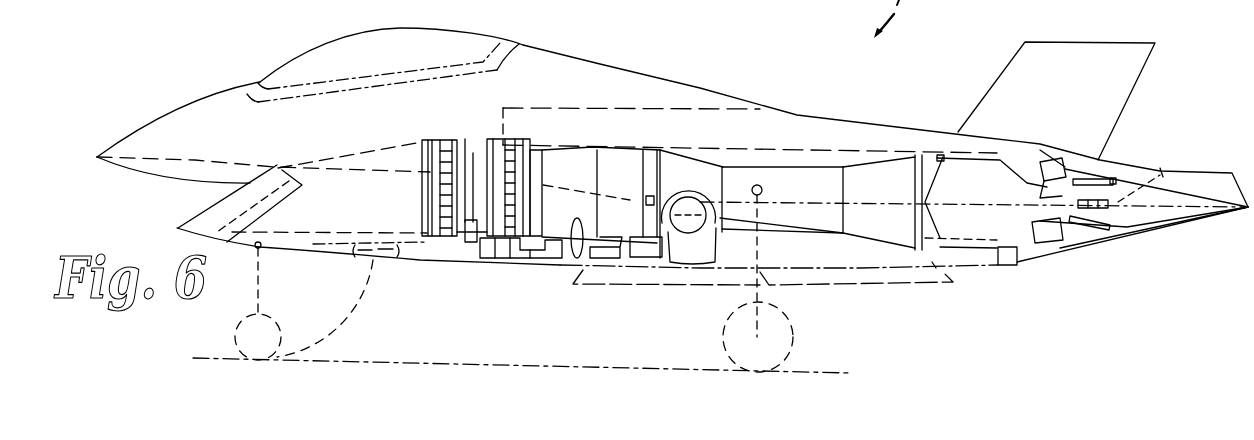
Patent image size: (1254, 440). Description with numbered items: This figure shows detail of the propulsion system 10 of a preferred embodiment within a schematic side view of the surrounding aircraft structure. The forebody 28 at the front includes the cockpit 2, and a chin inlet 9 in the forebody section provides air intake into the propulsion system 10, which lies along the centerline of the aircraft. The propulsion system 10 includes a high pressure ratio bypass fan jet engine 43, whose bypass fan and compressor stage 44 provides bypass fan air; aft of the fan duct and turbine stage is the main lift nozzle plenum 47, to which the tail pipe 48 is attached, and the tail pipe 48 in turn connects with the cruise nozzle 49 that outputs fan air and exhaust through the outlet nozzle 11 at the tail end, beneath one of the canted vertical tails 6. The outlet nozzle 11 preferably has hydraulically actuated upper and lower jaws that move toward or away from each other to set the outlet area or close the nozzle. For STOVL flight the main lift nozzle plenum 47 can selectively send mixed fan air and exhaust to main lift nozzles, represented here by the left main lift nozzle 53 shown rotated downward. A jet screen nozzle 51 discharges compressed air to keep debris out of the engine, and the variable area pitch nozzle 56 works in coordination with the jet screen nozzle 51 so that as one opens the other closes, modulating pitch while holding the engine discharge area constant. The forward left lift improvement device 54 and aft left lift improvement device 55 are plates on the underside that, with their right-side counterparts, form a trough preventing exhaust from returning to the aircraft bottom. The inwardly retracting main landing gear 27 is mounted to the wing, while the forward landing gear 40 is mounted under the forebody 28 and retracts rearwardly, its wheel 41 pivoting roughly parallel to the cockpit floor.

The forebody 28 is at (177, 37).
The cockpit 2 is at (308, 65).
The chin inlet 9 is at (176, 197).
The propulsion system 10 is at (404, 129).
The bypass fan and compressor stage 44 is at (473, 153).
The high pressure ratio bypass fan jet engine 43 is at (579, 183).
The main lift nozzle plenum 47 is at (687, 160).
The tail pipe 48 is at (803, 195).
The cruise nozzle 49 is at (958, 161).
The canted vertical tail 6 is at (1005, 78).
The outlet nozzle 11 is at (1127, 212).
The variable area pitch nozzle 56 is at (1018, 247).
The jet screen nozzle 51 is at (570, 266).
The left main lift nozzle 53 is at (690, 260).
The forward left lift improvement device 54 is at (731, 284).
The aft left lift improvement device 55 is at (863, 285).
The main landing gear 27 is at (792, 354).
The forward landing gear 40 is at (256, 294).
The wheel 41 is at (268, 350).